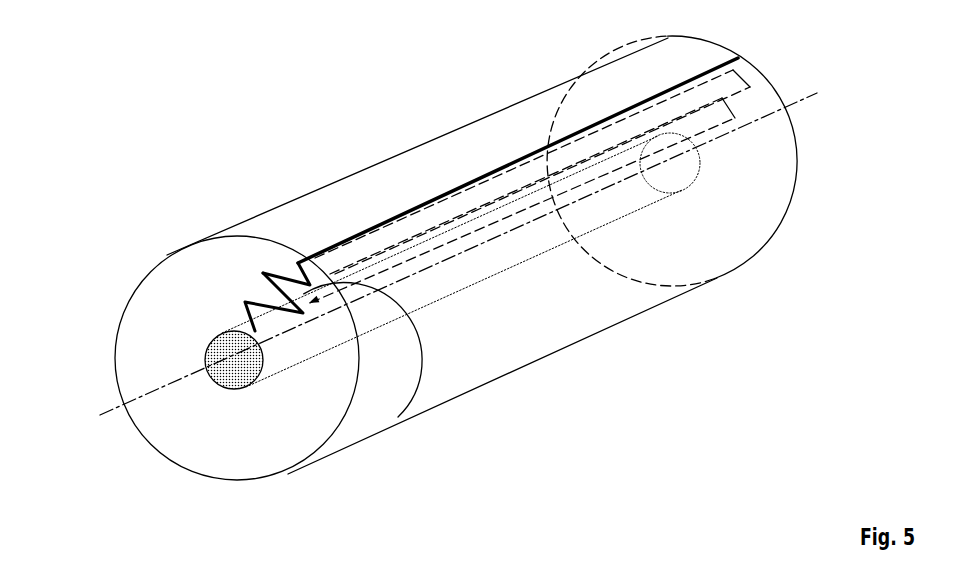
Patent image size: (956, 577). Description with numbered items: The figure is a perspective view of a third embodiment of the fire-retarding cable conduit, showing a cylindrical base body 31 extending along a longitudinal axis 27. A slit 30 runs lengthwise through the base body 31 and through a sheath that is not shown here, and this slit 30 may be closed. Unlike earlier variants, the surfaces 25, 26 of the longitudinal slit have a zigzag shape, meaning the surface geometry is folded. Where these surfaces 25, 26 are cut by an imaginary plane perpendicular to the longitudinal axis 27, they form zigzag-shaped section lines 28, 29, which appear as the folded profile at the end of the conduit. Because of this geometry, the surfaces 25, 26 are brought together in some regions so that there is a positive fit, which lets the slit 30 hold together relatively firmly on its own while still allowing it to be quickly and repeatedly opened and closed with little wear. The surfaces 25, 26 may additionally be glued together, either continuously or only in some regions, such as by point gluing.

The surface of the longitudinal slit 25 is at (285, 266).
The surface of the longitudinal slit 26 is at (398, 417).
The longitudinal axis 27 is at (797, 101).
The zigzag-shaped section line 28 is at (175, 257).
The zigzag-shaped section line 29 is at (247, 306).
The slit 30 is at (483, 173).
The base body 31 is at (540, 332).